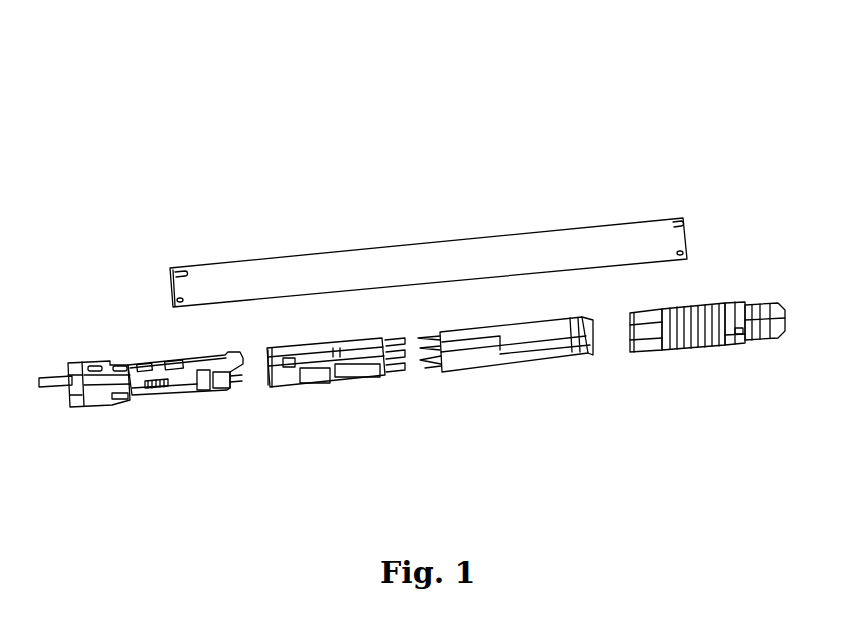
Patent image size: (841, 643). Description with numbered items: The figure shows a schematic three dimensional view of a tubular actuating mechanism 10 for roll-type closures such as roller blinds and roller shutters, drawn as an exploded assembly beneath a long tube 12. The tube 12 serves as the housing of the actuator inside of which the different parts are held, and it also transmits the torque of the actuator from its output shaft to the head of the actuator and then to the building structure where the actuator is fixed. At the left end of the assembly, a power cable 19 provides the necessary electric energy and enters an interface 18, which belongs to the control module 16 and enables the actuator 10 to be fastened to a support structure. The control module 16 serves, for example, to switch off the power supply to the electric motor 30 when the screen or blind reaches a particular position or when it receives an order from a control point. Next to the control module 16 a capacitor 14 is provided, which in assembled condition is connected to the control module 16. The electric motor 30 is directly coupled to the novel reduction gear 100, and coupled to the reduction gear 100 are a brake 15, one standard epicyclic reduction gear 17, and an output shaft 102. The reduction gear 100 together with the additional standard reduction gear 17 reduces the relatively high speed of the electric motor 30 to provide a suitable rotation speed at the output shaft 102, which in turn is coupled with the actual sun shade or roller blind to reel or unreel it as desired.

The tubular actuating mechanism 10 is at (495, 134).
The tube 12 is at (450, 257).
The capacitor 14 is at (333, 378).
The brake 15 is at (682, 312).
The control module 16 is at (168, 388).
The standard epicyclic reduction gear 17 is at (712, 333).
The interface 18 is at (83, 407).
The power cable 19 is at (50, 377).
The electric motor 30 is at (495, 358).
The reduction gear 100 is at (650, 342).
The output shaft 102 is at (755, 312).